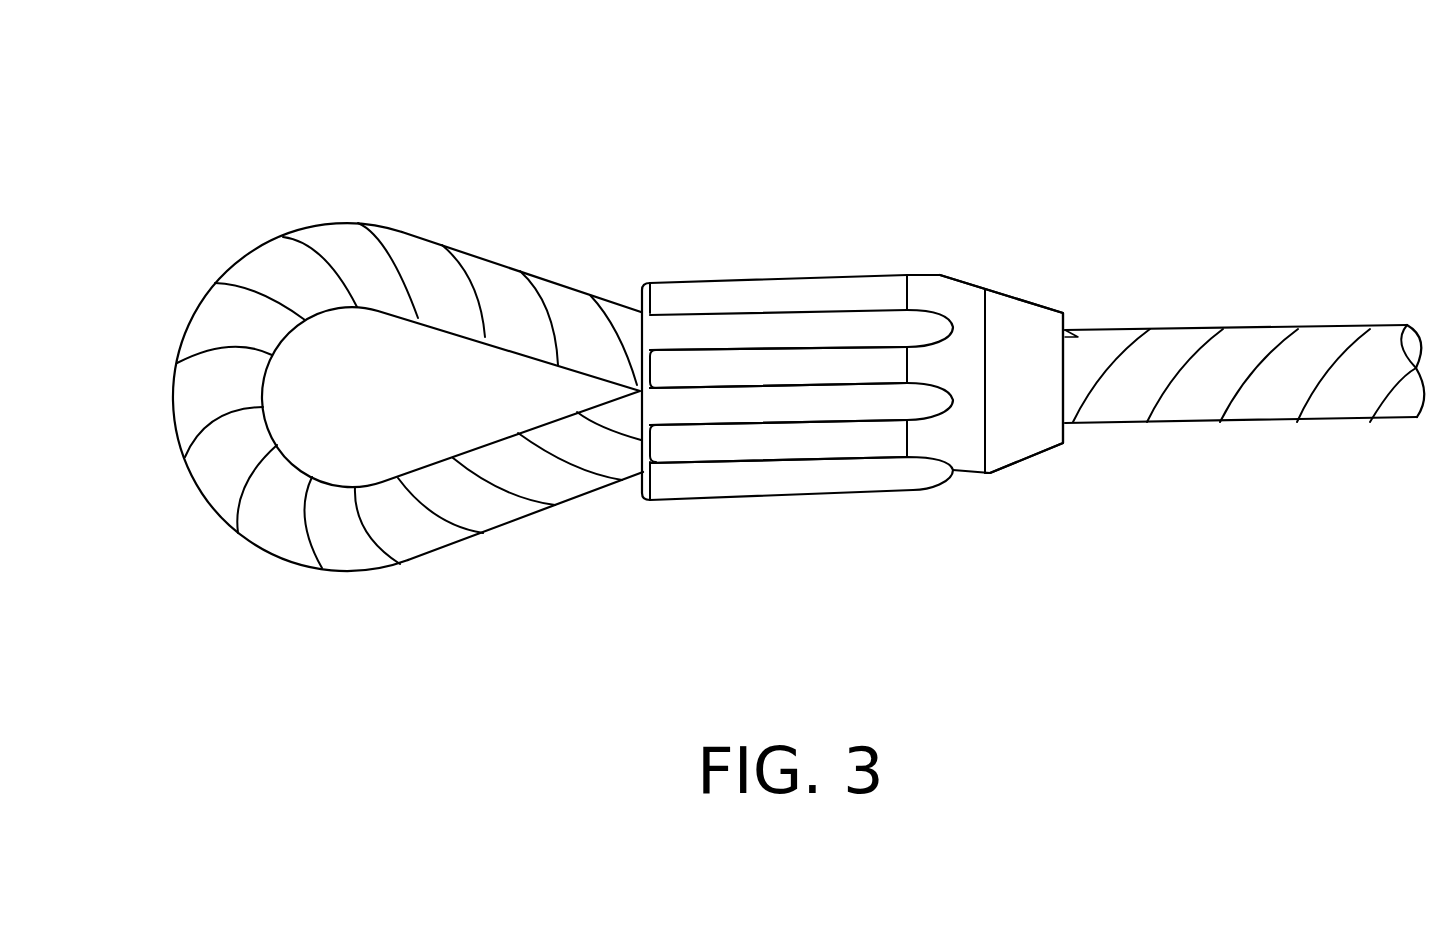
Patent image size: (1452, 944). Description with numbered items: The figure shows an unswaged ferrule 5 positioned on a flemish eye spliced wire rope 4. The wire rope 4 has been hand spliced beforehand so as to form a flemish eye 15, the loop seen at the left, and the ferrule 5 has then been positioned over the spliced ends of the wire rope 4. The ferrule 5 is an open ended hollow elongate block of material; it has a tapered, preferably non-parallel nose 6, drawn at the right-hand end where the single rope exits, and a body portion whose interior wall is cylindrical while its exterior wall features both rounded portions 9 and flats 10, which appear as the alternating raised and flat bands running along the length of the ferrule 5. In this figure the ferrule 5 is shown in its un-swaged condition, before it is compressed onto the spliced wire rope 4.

The wire rope 4 is at (1230, 355).
The ferrule 5 is at (748, 280).
The nose 6 is at (974, 479).
The rounded portions 9 is at (792, 290).
The flats 10 is at (824, 329).
The flemish eye 15 is at (423, 263).